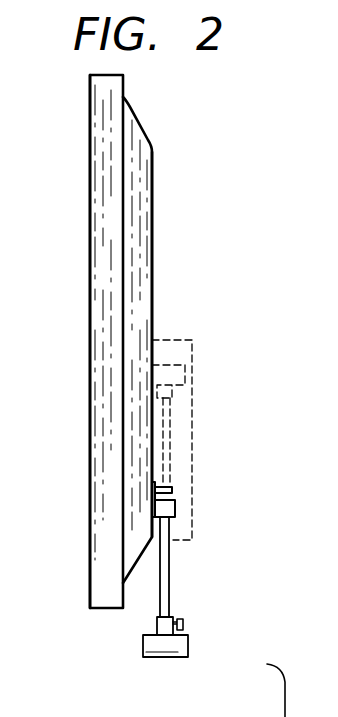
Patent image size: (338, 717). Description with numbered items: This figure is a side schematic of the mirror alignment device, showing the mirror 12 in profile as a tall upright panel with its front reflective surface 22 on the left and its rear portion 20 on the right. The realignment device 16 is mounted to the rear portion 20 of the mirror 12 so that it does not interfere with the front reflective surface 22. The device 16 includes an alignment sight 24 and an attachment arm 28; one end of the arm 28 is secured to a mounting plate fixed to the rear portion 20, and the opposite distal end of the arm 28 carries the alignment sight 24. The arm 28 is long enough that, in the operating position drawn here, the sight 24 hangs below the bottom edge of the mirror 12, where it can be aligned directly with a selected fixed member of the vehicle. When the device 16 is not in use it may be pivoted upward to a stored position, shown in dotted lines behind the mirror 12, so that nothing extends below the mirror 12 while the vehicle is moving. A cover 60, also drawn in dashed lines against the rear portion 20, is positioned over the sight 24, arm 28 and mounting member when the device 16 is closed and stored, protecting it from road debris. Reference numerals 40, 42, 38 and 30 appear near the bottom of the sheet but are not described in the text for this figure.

The mirror 12 is at (168, 208).
The front reflective surface 22 is at (89, 232).
The rear portion 20 is at (153, 322).
The cover 60 is at (192, 420).
The realignment device 16 is at (180, 553).
The attachment arm 28 is at (170, 575).
The alignment sight 24 is at (185, 634).
The element 40 is at (82, 716).
The element 42 is at (137, 716).
The element 38 is at (178, 706).
The element 30 is at (21, 712).